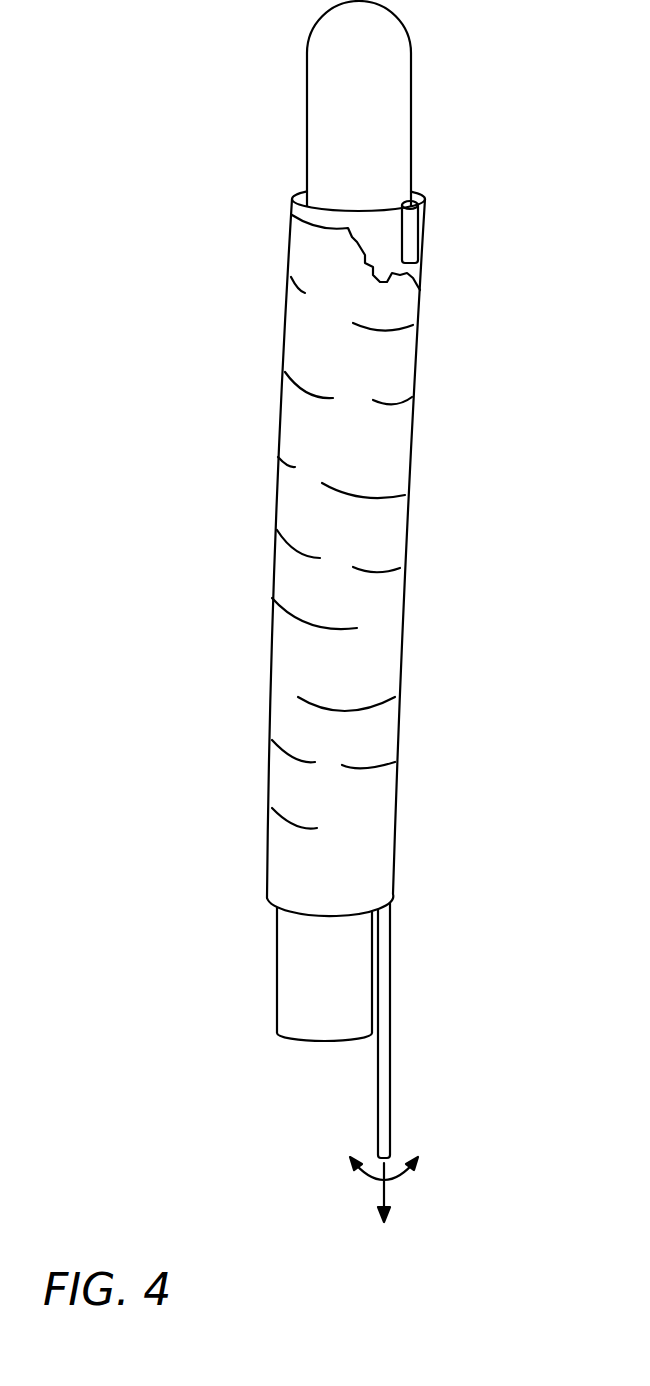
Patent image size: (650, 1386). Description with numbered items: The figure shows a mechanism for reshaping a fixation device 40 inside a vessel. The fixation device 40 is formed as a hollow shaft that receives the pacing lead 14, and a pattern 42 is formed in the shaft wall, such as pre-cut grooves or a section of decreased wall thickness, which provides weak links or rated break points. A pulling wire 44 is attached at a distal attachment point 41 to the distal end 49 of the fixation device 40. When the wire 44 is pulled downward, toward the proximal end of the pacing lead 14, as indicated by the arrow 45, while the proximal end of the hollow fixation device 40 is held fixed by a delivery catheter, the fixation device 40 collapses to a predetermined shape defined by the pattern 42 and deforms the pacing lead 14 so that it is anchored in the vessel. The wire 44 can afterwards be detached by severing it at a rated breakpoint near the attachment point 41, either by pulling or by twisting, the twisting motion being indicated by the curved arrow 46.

The pacing lead 14 is at (412, 105).
The fixation device 40 is at (364, 674).
The distal attachment point 41 is at (413, 230).
The pattern 42 is at (275, 502).
The pulling wire 44 is at (392, 1010).
The axial movement arrow 45 is at (382, 1195).
The rotational movement arrow 46 is at (403, 1175).
The distal end 49 is at (291, 243).